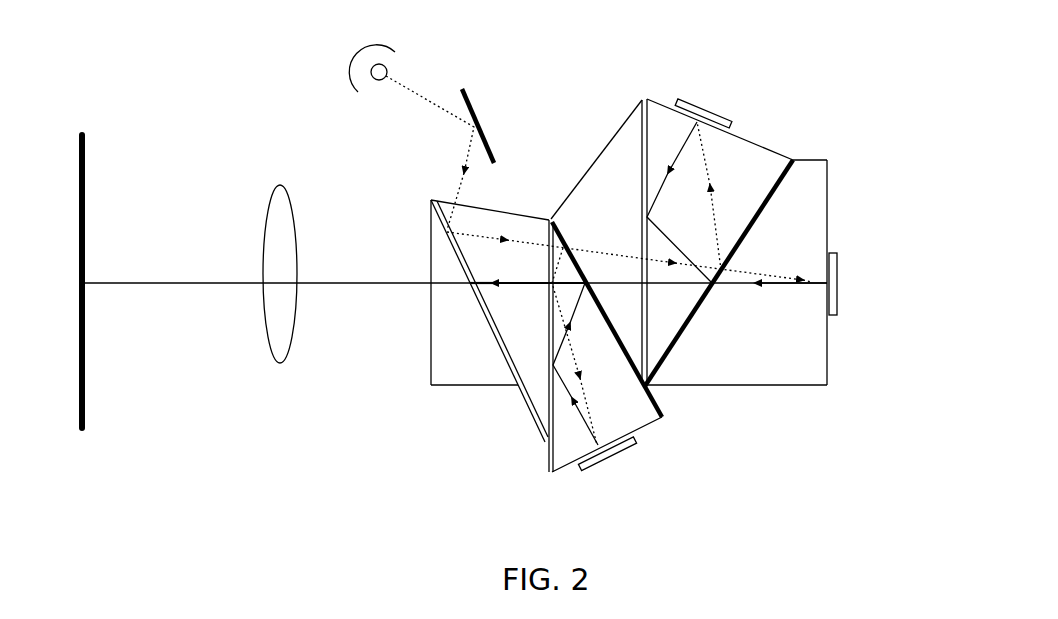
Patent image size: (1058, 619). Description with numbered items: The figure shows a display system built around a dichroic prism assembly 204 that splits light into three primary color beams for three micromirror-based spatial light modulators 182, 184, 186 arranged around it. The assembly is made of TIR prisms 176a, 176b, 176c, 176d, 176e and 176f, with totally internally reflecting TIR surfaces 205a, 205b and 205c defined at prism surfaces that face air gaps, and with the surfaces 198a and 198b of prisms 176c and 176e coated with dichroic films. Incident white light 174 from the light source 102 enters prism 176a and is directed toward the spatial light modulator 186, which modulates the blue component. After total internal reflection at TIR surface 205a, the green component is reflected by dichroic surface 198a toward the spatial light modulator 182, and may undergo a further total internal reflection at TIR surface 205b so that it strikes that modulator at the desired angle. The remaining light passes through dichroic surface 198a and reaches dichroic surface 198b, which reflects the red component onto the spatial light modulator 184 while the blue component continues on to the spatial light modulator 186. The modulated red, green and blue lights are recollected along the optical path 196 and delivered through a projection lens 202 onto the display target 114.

The display target 114 is at (85, 155).
The projection lens 202 is at (283, 187).
The optical axis / light path 196 is at (387, 277).
The light source 102 is at (397, 41).
The incident white light 174 is at (431, 134).
The TIR prism 176a is at (490, 379).
The prism 176b is at (539, 329).
The TIR prism 176c is at (646, 424).
The TIR prism 176d is at (629, 217).
The TIR prism 176e is at (773, 184).
The TIR prism 176f is at (801, 376).
The TIR surface 205a is at (537, 420).
The TIR surface 205b is at (552, 470).
The TIR surface 205c is at (648, 108).
The dichroic prism assembly 204 is at (630, 113).
The dichroic surface 198a is at (663, 408).
The dichroic surface 198b is at (795, 172).
The spatial light modulator 182 is at (642, 481).
The spatial light modulator 184 is at (725, 102).
The spatial light modulator 186 is at (883, 294).